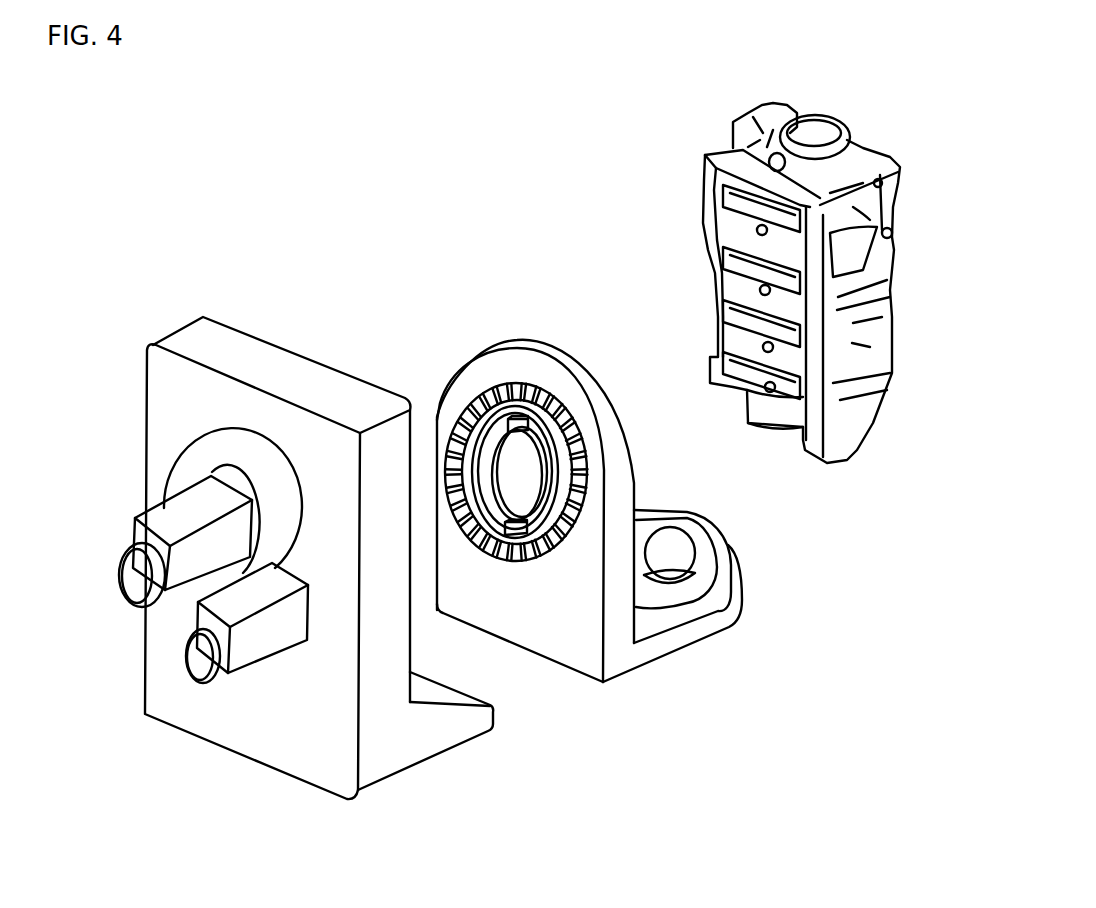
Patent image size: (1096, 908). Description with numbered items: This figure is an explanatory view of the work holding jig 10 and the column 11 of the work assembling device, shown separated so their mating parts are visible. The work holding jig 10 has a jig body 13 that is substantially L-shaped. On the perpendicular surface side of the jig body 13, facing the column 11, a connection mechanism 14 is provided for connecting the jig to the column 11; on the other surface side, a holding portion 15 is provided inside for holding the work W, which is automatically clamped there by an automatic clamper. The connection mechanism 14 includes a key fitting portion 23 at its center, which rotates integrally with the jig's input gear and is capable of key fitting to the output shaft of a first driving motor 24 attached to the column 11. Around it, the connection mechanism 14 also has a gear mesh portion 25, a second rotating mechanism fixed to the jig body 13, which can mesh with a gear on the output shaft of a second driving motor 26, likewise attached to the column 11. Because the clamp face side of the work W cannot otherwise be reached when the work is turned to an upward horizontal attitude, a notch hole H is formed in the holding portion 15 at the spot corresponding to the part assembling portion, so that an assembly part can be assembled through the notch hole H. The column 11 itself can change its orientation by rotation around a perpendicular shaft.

The work holding jig 10 is at (517, 295).
The column 11 is at (237, 350).
The jig body 13 is at (470, 388).
The connection mechanism 14 is at (553, 386).
The holding portion 15 is at (703, 548).
The key fitting portion 23 is at (545, 448).
The first driving motor 24 is at (165, 523).
The gear mesh portion 25 is at (578, 478).
The second driving motor 26 is at (268, 645).
The notch hole H is at (673, 548).
The work W is at (866, 150).